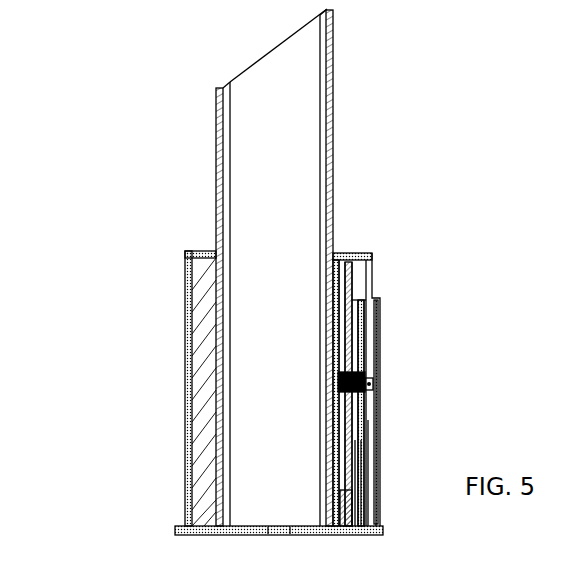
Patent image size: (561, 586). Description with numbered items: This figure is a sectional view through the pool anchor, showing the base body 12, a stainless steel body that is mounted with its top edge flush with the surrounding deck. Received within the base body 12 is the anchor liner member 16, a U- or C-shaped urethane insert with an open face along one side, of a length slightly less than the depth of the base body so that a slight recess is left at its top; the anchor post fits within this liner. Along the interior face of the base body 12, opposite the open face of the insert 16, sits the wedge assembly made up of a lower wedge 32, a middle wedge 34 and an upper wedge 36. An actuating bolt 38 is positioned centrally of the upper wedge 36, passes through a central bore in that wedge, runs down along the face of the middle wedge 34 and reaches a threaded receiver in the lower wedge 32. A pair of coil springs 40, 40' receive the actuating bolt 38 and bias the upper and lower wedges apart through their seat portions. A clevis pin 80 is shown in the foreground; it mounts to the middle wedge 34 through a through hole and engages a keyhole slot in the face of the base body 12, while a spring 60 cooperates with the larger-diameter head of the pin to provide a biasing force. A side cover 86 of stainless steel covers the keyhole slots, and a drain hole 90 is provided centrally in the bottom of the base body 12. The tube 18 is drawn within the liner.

The inner tube 18 is at (191, 267).
The anchor liner member 16 is at (159, 392).
The base body 12 is at (180, 428).
The actuating bolt 38 is at (344, 273).
The upper wedge 36 is at (355, 298).
The coil spring 40 is at (389, 383).
The side cover 86 is at (378, 315).
The clevis pin 80 is at (441, 409).
The spring 60 is at (355, 390).
The middle wedge 34 is at (370, 435).
The coil spring 40' is at (397, 483).
The lower wedge 32 is at (355, 497).
The drain hole 90 is at (278, 537).